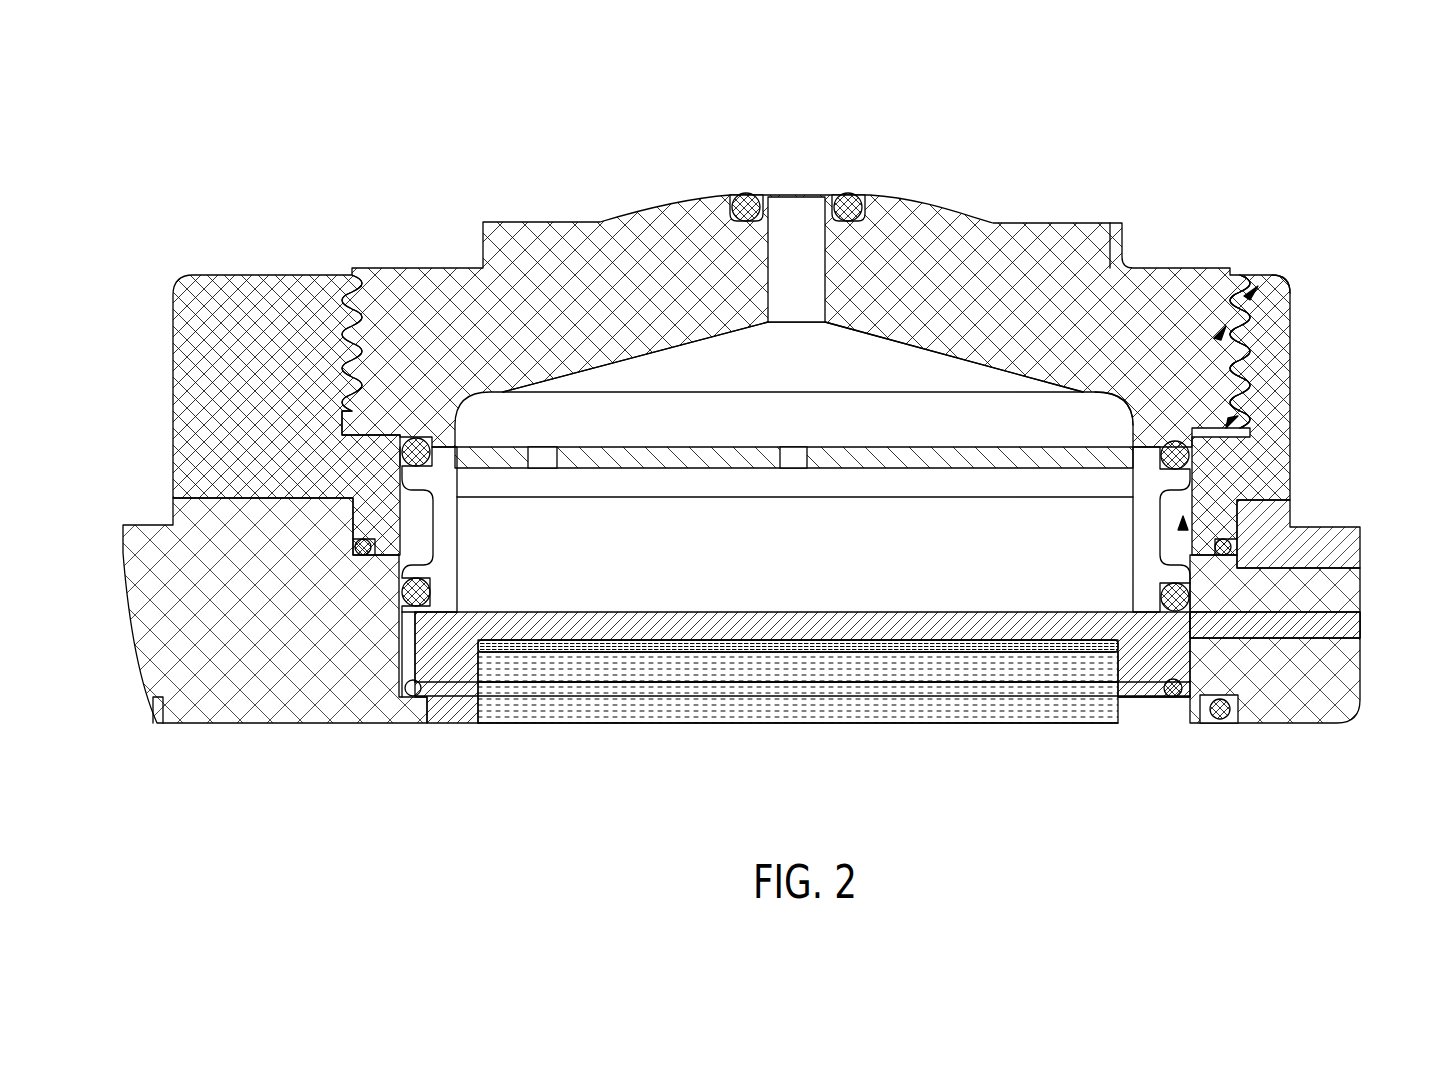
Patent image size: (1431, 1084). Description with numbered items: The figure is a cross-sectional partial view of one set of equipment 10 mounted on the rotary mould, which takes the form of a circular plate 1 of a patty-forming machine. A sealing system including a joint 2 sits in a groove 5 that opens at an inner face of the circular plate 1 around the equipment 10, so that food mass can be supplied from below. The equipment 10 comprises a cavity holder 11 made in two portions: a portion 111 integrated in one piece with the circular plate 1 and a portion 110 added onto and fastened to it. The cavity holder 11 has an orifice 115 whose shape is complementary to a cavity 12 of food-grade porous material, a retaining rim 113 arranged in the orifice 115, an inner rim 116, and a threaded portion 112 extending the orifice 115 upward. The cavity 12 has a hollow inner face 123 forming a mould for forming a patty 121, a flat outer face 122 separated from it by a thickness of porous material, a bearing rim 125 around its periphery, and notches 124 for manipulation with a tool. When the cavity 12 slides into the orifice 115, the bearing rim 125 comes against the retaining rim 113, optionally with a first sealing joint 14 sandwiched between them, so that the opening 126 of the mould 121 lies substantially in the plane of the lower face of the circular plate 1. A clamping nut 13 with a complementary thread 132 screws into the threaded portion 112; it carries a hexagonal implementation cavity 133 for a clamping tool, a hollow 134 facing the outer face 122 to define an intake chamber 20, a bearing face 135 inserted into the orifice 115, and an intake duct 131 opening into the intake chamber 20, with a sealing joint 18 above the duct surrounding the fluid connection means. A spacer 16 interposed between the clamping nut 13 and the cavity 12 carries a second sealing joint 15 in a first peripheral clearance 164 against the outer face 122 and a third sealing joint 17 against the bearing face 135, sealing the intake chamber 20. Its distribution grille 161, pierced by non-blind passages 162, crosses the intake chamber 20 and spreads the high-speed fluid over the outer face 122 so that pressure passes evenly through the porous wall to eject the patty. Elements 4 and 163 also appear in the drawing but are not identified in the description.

The circular plate 1 is at (725, 653).
The joint 2 is at (152, 700).
The mounting plate 4 is at (1300, 630).
The groove 5 is at (1233, 714).
The equipment 10 is at (197, 215).
The cavity holder 11 is at (799, 421).
The portion of the cavity holder 110 is at (1268, 342).
The portion of the cavity holder 111 is at (1267, 513).
The threaded portion 112 is at (1258, 380).
The retaining rim 113 is at (1173, 693).
The orifice 115 is at (1190, 576).
The inner rim 116 is at (1232, 420).
The cavity 12 is at (756, 666).
The mould for forming a patty 121 is at (700, 705).
The outer face 122 is at (765, 604).
The hollow inner face 123 is at (792, 640).
The notches 124 is at (407, 648).
The bearing rim 125 is at (1130, 697).
The opening 126 is at (795, 733).
The clamping nut 13 is at (849, 275).
The intake duct 131 is at (795, 228).
The complementary thread 132 is at (1262, 287).
The implementation cavity 133 is at (1122, 240).
The hollow 134 is at (703, 343).
The bearing face 135 is at (1043, 432).
The first sealing joint 14 is at (412, 696).
The second sealing joint 15 is at (1190, 602).
The spacer 16 is at (770, 392).
The distribution grille 161 is at (633, 452).
The non-blind passages 162 is at (1125, 452).
The lower O-ring 163 is at (432, 598).
The first peripheral clearance 164 is at (433, 452).
The third sealing joint 17 is at (400, 452).
The sealing joint 18 is at (851, 196).
The intake chamber 20 is at (673, 538).